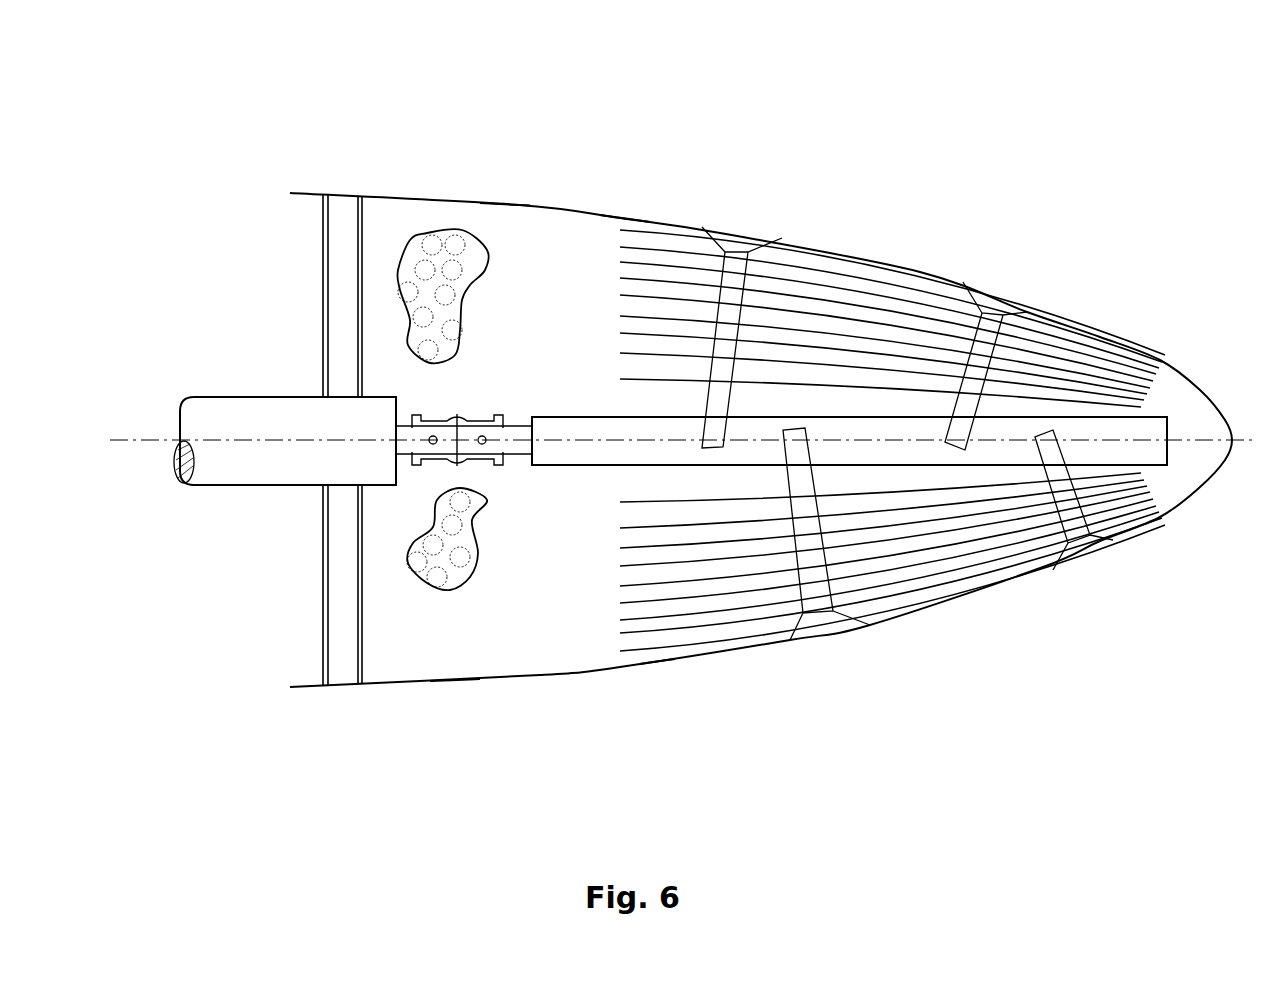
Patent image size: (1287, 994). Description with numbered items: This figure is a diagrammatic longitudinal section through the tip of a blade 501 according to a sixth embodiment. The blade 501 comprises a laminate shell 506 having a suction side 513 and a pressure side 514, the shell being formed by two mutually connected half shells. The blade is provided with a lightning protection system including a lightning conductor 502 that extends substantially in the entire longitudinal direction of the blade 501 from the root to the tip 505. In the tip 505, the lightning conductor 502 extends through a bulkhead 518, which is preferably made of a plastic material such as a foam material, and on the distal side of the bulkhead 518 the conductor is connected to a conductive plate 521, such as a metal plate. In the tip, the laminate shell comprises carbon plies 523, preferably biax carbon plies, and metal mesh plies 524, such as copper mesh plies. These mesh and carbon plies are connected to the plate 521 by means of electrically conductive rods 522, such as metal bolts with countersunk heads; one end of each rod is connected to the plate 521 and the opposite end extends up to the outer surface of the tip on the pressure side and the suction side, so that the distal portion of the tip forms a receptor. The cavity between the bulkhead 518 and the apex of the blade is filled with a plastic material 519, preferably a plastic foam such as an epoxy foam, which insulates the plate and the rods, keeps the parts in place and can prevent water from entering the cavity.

The blade 501 is at (330, 190).
The lightning conductor 502 is at (233, 463).
The tip 505 is at (608, 212).
The laminate shell 506 is at (658, 685).
The suction side 513 is at (515, 200).
The pressure side 514 is at (450, 683).
The bulkhead 518 is at (340, 668).
The plastic material 519 is at (440, 240).
The conductive plate 521 is at (565, 455).
The electrically conductive rods 522 is at (1078, 548).
The carbon plies 523 is at (995, 555).
The metal mesh plies 524 is at (915, 555).